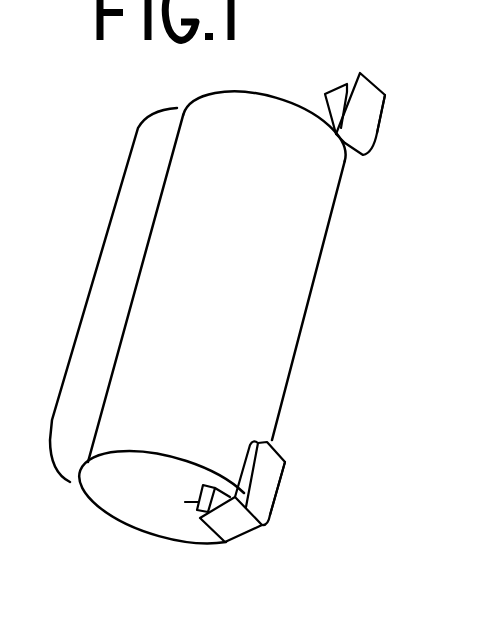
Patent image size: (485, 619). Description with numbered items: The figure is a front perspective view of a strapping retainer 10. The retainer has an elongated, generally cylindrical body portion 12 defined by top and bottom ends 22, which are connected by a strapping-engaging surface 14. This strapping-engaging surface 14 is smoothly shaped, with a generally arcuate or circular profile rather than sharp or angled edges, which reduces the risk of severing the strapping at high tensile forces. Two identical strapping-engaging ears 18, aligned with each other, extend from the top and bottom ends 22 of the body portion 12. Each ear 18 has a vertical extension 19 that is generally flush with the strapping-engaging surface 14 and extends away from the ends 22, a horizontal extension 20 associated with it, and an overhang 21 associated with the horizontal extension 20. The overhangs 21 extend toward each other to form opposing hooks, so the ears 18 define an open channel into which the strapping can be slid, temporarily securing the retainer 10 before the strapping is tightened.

The strapping retainer 10 is at (136, 89).
The body portion 12 is at (88, 296).
The strapping-engaging surface 14 is at (204, 99).
The strapping-engaging ears 18 is at (397, 79).
The vertical extension 19 is at (318, 93).
The horizontal extension 20 is at (344, 72).
The overhang 21 is at (372, 132).
The top and bottom ends 22 is at (262, 89).